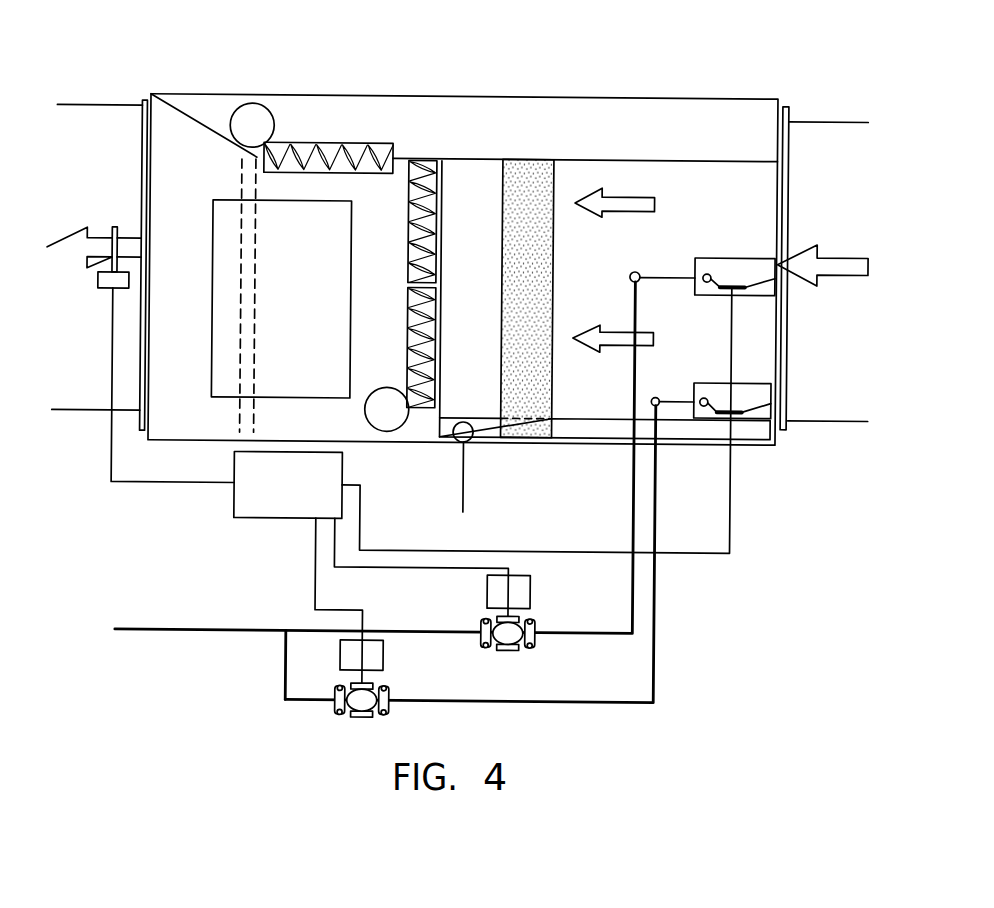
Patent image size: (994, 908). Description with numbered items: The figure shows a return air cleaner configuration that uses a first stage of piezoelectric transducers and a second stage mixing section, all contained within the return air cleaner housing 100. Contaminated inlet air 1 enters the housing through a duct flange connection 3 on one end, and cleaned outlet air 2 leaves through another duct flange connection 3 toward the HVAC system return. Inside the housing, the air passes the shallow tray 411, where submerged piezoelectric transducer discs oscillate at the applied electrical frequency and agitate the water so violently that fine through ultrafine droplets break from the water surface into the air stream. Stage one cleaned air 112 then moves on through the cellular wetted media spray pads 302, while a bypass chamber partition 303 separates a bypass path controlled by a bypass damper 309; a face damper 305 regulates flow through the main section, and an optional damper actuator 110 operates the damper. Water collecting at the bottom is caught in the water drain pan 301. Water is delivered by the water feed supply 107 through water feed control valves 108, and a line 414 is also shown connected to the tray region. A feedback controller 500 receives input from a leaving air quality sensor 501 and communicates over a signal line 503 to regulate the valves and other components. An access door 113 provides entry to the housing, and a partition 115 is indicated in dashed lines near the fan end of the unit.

The contaminated inlet air 1 is at (843, 273).
The cleaned outlet air 2 is at (101, 230).
The duct flange connection 3 is at (140, 103).
The return air cleaner housing 100 is at (578, 98).
The water feed supply 107 is at (140, 630).
The water feed control valve 108 is at (535, 618).
The damper actuator 110 is at (274, 126).
The stage 1 cleaned air 112 is at (612, 209).
The access door 113 is at (300, 319).
The partition 115 is at (242, 188).
The water drain pan 301 is at (697, 428).
The cellular wetted media spray pads 302 is at (544, 251).
The bypass chamber partition 303 is at (675, 158).
The face damper 305 is at (416, 222).
The bypass damper 309 is at (380, 150).
The shallow tray 411 is at (735, 257).
The refrigerant line 414 is at (655, 673).
The feedback controller 500 is at (303, 498).
The leaving air quality sensor 501 is at (113, 338).
The signal line 503 is at (731, 527).